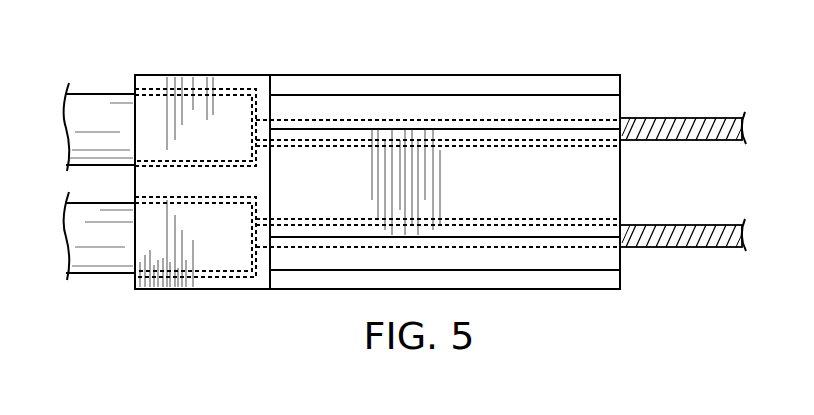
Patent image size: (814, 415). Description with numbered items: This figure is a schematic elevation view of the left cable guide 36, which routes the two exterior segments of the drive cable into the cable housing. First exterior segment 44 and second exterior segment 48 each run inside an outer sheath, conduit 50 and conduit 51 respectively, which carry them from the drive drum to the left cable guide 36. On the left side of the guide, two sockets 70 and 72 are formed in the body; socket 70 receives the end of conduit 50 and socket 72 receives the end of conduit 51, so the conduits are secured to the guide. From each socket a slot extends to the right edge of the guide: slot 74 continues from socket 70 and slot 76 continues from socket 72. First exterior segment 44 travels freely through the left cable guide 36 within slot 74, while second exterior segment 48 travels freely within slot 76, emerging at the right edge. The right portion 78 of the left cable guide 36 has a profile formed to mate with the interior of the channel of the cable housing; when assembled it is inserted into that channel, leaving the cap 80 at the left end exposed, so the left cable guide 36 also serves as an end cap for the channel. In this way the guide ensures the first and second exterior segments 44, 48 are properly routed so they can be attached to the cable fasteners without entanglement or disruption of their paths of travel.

The left cable guide 36 is at (366, 70).
The first exterior segment 44 is at (664, 126).
The second exterior segment 48 is at (673, 240).
The conduit 50 is at (99, 101).
The conduit 51 is at (100, 262).
The socket 70 is at (231, 98).
The socket 72 is at (233, 272).
The slot 74 is at (610, 150).
The slot 76 is at (610, 218).
The right portion 78 is at (511, 82).
The cap 80 is at (168, 287).